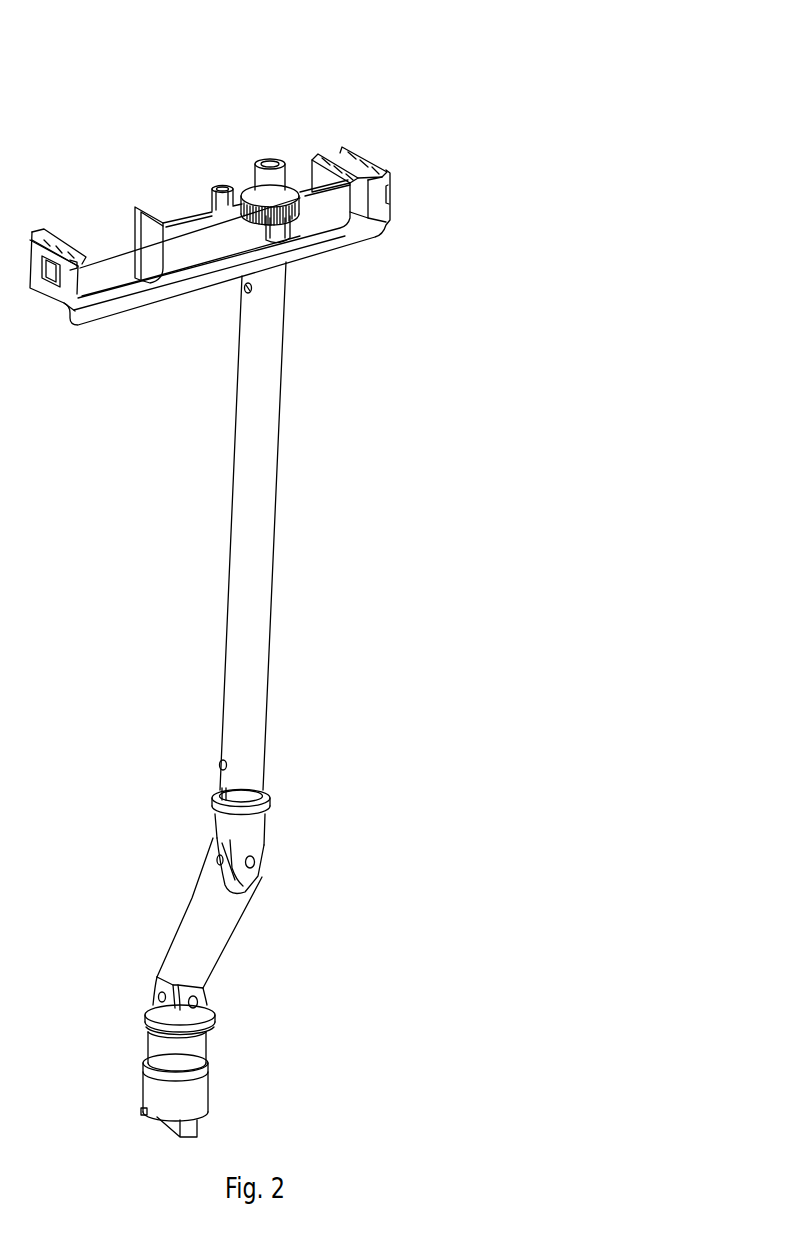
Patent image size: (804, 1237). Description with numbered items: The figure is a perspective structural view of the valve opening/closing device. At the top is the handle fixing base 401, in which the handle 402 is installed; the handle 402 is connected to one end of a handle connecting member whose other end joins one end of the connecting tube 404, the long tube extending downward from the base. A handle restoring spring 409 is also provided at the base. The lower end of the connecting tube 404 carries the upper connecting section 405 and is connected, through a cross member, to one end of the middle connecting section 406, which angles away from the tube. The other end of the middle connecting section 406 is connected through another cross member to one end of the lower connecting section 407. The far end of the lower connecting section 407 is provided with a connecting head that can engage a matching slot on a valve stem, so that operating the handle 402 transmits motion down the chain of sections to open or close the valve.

The handle fixing base 401 is at (382, 238).
The handle 402 is at (202, 253).
The connecting tube 404 is at (250, 575).
The upper connecting section 405 is at (247, 823).
The middle connecting section 406 is at (207, 950).
The lower connecting section 407 is at (185, 1100).
The handle restoring spring 409 is at (292, 197).